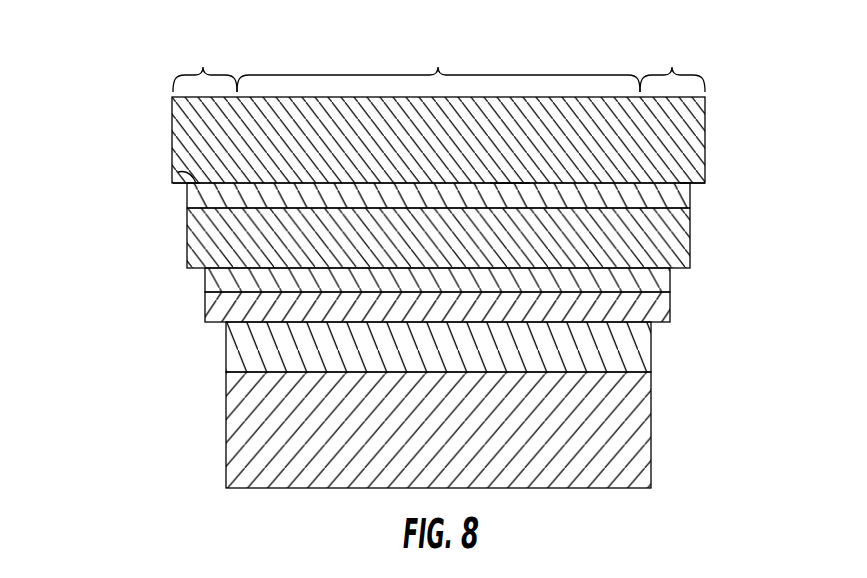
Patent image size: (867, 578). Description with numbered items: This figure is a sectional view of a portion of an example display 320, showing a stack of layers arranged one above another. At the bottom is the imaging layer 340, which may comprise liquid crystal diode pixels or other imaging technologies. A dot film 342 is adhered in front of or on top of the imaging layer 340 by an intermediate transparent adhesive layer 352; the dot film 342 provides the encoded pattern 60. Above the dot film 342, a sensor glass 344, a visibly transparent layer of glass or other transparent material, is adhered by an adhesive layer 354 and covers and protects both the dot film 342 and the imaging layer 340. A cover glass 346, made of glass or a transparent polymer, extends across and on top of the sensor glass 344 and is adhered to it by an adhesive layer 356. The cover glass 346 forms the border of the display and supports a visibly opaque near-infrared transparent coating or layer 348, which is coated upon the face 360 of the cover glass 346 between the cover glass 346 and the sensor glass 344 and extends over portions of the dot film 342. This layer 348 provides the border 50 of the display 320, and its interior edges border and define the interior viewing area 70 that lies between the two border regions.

The display 320 is at (108, 68).
The border 50 is at (439, 66).
The interior viewing area 70 is at (438, 66).
The cover glass 346 is at (172, 138).
The visibly opaque near-infrared transparent coating or layer 348 is at (178, 172).
The face of cover glass 360 is at (510, 183).
The adhesive layer 356 is at (692, 193).
The sensor glass 344 is at (187, 238).
The dot film 342 is at (205, 305).
The adhesive layer 354 is at (672, 280).
The encoded pattern 60 is at (672, 305).
The intermediate transparent adhesive layer 352 is at (652, 349).
The imaging layer 340 is at (225, 415).